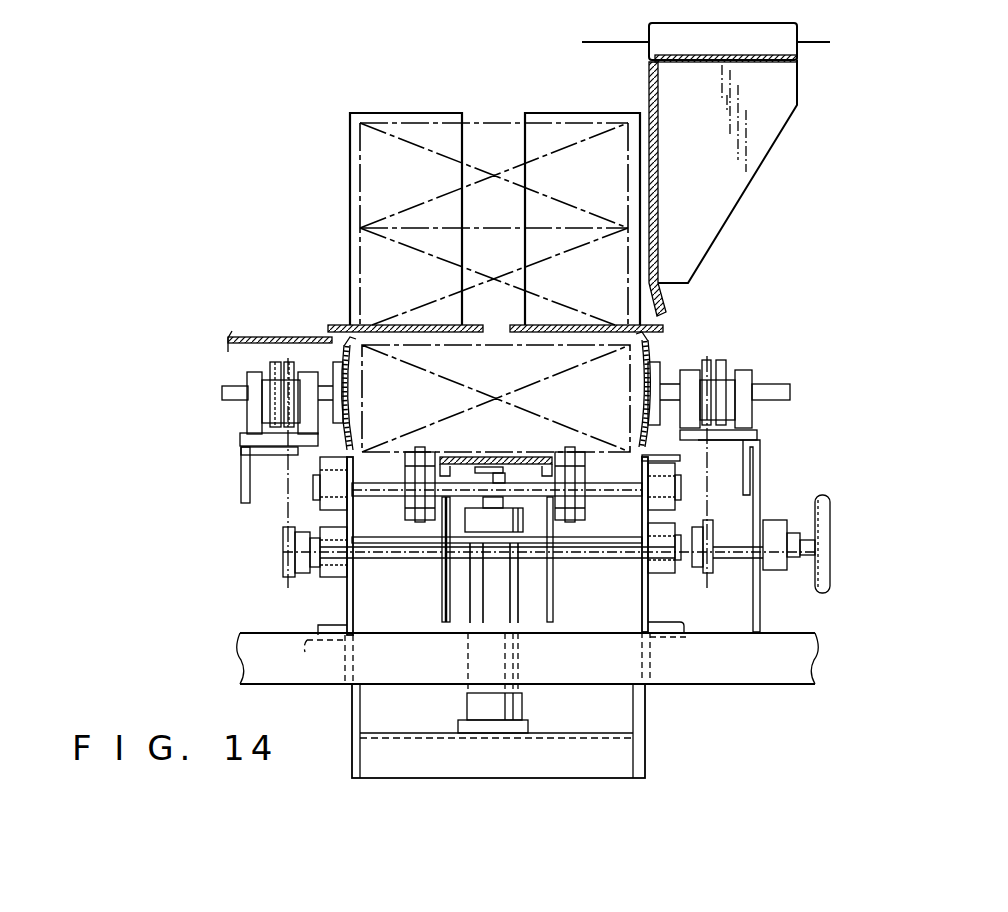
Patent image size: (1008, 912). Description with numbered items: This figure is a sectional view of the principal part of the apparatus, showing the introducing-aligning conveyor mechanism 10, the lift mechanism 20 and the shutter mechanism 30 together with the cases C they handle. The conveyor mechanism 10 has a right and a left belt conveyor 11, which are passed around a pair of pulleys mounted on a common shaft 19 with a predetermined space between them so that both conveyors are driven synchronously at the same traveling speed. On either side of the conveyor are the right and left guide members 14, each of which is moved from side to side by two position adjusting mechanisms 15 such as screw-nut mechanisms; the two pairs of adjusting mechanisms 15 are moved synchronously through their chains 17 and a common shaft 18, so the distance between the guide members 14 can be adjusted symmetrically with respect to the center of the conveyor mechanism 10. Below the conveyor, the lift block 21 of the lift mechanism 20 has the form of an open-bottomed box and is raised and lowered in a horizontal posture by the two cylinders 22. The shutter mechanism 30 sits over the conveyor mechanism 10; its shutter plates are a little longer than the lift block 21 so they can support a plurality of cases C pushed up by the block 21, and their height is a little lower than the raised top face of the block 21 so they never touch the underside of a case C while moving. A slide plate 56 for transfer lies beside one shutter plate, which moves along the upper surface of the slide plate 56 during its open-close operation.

The introducing-aligning conveyor mechanism 10 is at (393, 574).
The belt conveyors 11 is at (421, 453).
The guide members 14 is at (356, 398).
The position adjusting mechanisms 15 is at (245, 376).
The chains 17 is at (288, 492).
The common shaft 18 is at (833, 520).
The common shaft 19 is at (612, 488).
The lift mechanism 20 is at (565, 583).
The lift block 21 is at (440, 598).
The cylinders 22 is at (483, 608).
The shutter mechanism 30 is at (680, 299).
The slide plate 56 is at (262, 334).
The cases C is at (368, 265).